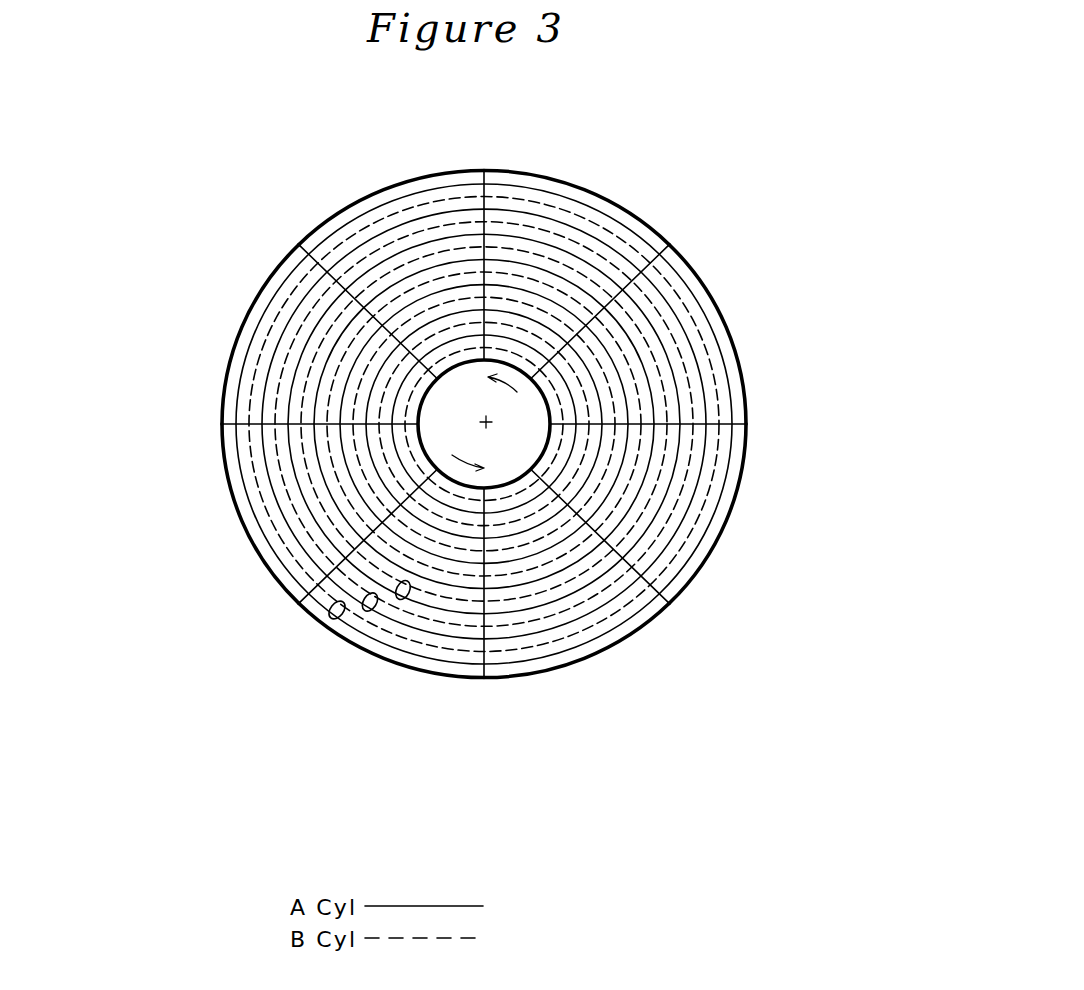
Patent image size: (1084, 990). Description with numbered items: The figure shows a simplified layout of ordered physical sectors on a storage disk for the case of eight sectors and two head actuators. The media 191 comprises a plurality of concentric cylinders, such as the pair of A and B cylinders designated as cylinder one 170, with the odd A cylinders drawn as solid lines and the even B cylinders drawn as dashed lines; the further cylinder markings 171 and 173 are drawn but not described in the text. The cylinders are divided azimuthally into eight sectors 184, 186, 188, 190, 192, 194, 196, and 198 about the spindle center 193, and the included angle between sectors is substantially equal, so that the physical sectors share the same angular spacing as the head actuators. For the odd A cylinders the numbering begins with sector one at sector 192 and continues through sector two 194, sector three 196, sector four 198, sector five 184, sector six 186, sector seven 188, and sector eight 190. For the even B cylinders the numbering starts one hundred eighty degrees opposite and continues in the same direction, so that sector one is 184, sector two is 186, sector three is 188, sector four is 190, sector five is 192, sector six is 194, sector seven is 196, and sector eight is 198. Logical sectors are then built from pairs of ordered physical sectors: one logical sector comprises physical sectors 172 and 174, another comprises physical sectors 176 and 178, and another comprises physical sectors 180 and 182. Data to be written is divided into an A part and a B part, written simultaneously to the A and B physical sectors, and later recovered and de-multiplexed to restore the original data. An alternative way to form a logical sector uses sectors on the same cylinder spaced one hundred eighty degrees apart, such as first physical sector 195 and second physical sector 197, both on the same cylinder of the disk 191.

The cylinder 1 170 is at (328, 620).
The cylinder 2 (A and B) 171 is at (362, 612).
The physical sector 172 is at (660, 615).
The cylinder 3 (A and B) 173 is at (395, 600).
The physical sector 174 is at (400, 208).
The physical sector 176 is at (603, 613).
The physical sector 178 is at (398, 238).
The physical sector 180 is at (552, 605).
The physical sector 182 is at (382, 273).
The sector 184 is at (310, 622).
The sector 186 is at (237, 520).
The sector 188 is at (237, 323).
The sector 190 is at (447, 166).
The media 191 is at (530, 101).
The sector 192 is at (612, 192).
The spindle center 193 is at (487, 418).
The sector 194 is at (733, 328).
The first physical sector 195 is at (686, 273).
The sector 196 is at (733, 511).
The second physical sector 197 is at (237, 457).
The sector 198 is at (537, 683).